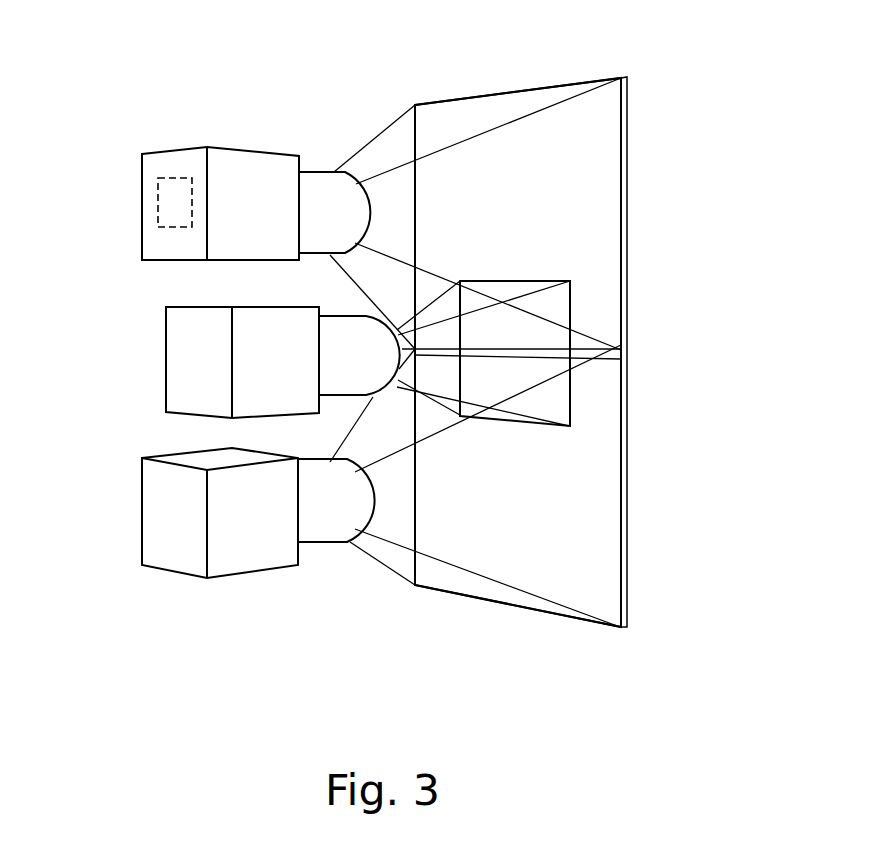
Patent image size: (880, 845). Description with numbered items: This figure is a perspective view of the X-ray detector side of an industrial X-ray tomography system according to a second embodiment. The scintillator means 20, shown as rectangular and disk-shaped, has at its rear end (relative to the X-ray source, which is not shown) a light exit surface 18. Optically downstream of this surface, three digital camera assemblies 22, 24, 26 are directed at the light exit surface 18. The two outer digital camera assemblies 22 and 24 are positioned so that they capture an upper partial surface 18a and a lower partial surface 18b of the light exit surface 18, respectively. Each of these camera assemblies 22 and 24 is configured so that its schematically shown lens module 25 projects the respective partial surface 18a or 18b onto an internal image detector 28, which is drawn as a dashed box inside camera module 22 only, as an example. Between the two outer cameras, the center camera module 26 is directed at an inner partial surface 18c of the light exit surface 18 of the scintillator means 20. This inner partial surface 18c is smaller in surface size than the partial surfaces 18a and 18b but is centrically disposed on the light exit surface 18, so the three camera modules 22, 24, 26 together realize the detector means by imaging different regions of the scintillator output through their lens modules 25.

The light exit surface 18 is at (550, 82).
The upper partial surface 18a is at (613, 122).
The lower partial surface 18b is at (613, 605).
The inner partial surface 18c is at (553, 394).
The scintillator means 20 is at (686, 540).
The digital camera assembly 22 is at (134, 215).
The digital camera assembly 24 is at (134, 518).
The lens module 25 is at (343, 222).
The center camera module 26 is at (160, 361).
The internal image detector 28 is at (176, 178).